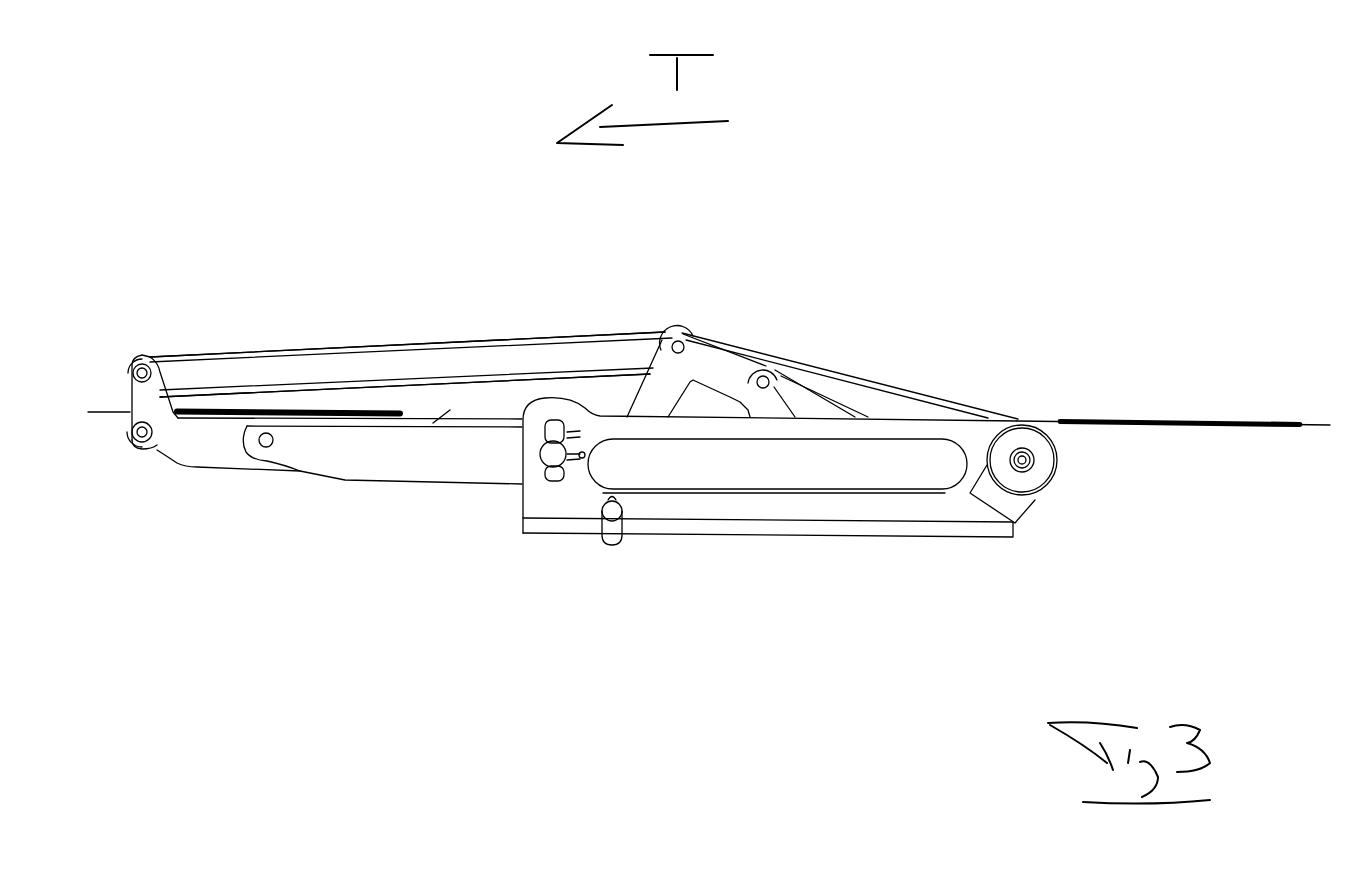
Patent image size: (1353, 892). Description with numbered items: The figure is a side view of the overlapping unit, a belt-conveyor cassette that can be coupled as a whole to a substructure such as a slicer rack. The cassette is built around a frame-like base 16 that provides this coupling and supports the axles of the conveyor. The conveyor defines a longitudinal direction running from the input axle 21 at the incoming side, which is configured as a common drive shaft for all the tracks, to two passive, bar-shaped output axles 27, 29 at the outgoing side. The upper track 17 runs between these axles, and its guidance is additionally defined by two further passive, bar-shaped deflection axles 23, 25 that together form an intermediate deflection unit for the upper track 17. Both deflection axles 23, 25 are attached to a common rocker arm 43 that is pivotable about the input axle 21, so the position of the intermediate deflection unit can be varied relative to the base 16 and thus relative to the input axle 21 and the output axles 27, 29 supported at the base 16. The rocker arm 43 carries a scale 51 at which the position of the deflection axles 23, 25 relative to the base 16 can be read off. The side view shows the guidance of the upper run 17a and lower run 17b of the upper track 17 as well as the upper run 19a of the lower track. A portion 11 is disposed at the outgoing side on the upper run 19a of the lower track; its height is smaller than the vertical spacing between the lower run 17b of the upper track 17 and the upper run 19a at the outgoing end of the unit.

The portion 11 is at (1282, 355).
The frame-like base 16 is at (430, 485).
The upper track 17 is at (513, 252).
The upper run of the upper track 17a is at (310, 340).
The lower run of the upper track 17b is at (333, 380).
The upper run of the lower track 19a is at (510, 412).
The input axle 21 is at (1032, 461).
The deflection axle 23 is at (678, 330).
The deflection axle 25 is at (765, 370).
The output axle 27 is at (134, 355).
The output axle 29 is at (147, 445).
The rocker arm 43 is at (826, 620).
The scale 51 is at (590, 632).